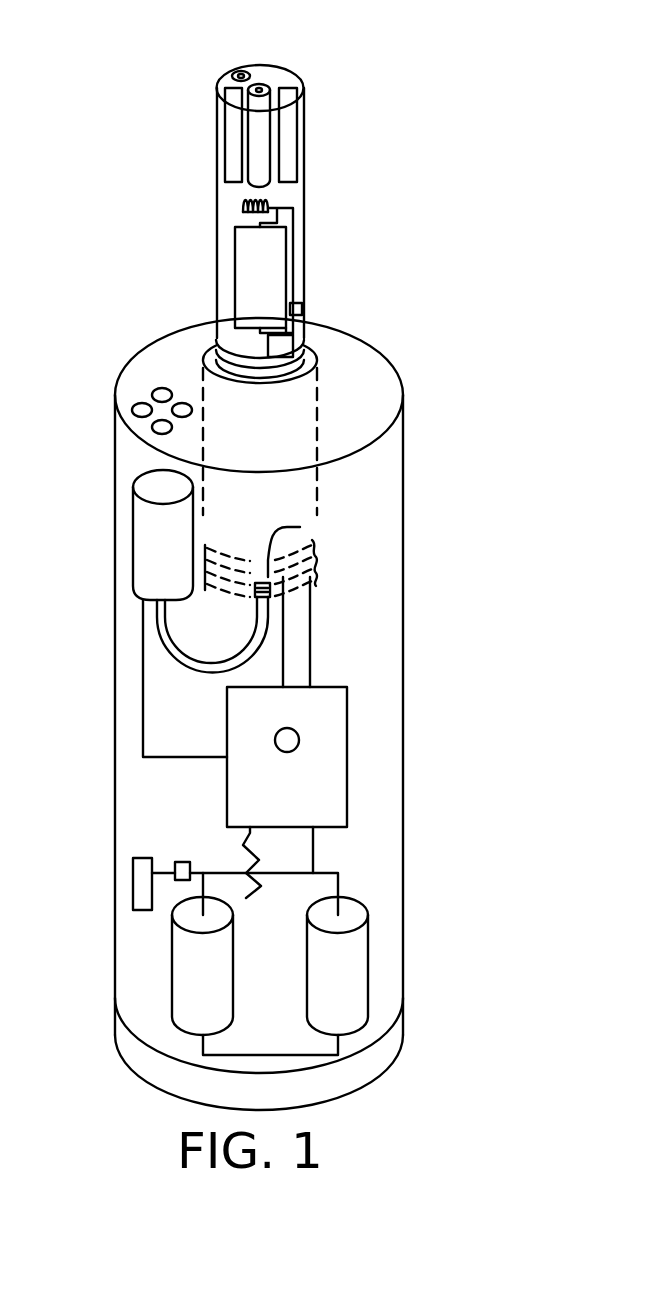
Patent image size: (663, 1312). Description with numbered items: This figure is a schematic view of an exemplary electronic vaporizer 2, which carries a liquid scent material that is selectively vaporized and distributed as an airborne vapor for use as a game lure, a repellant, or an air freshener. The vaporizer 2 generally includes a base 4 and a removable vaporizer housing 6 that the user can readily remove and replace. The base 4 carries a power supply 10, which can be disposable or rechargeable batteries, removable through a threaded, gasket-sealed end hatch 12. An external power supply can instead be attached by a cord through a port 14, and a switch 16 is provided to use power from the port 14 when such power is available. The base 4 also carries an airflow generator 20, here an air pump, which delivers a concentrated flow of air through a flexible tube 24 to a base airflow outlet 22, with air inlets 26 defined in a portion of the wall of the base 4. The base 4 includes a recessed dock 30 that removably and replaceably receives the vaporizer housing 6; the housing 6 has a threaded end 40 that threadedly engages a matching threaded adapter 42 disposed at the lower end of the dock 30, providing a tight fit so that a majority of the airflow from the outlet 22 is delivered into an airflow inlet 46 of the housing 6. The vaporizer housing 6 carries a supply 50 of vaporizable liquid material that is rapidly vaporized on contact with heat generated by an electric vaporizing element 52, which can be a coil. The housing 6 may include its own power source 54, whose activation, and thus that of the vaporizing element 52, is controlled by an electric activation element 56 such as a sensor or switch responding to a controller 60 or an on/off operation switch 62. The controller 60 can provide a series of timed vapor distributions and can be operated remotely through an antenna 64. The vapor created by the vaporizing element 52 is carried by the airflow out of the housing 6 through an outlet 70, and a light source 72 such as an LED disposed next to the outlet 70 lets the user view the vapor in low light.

The electronic vaporizer 2 is at (70, 80).
The base 4 is at (384, 560).
The vaporizer housing 6 is at (309, 220).
The power supply 10 is at (195, 970).
The end hatch 12 is at (390, 1040).
The port 14 is at (145, 885).
The switch 16 is at (182, 862).
The airflow generator 20 is at (157, 533).
The base airflow outlet 22 is at (300, 527).
The flexible tube 24 is at (182, 655).
The air inlets 26 is at (140, 403).
The recessed dock 30 is at (318, 500).
The threaded end 40 is at (268, 356).
The threaded adapter 42 is at (317, 573).
The airflow inlet 46 is at (258, 360).
The supply of vaporizable liquid material 50 is at (235, 162).
The electric vaporizing element 52 is at (243, 207).
The power source 54 is at (263, 288).
The electric activation element 56 is at (302, 308).
The controller 60 is at (313, 788).
The switch 62 is at (287, 740).
The antenna 64 is at (243, 851).
The outlet 70 is at (258, 88).
The light source 72 is at (240, 75).